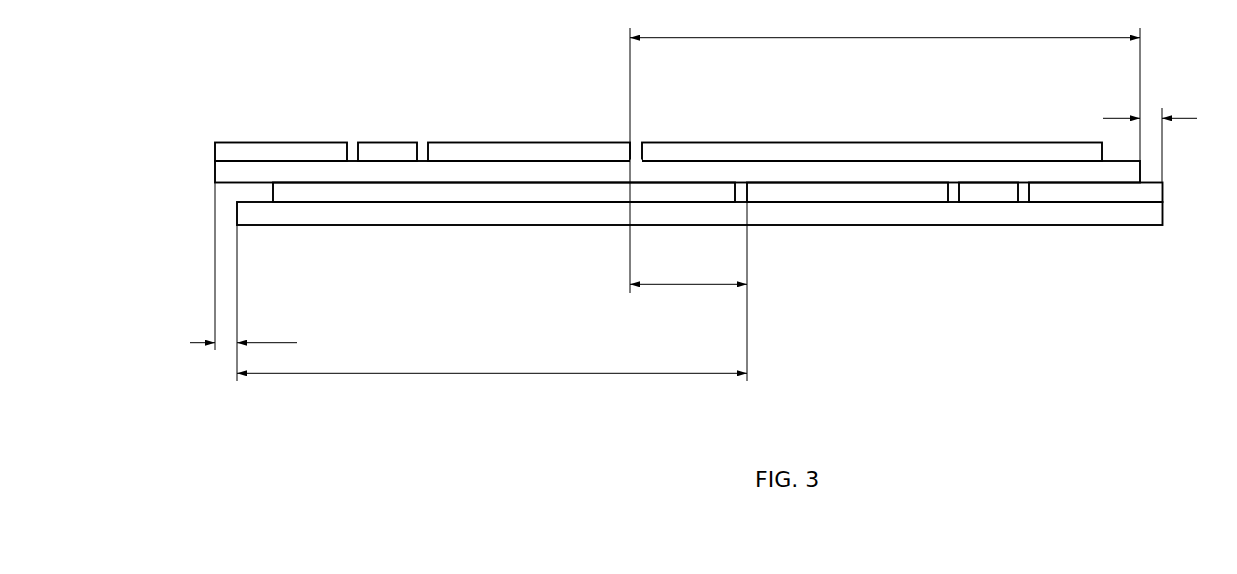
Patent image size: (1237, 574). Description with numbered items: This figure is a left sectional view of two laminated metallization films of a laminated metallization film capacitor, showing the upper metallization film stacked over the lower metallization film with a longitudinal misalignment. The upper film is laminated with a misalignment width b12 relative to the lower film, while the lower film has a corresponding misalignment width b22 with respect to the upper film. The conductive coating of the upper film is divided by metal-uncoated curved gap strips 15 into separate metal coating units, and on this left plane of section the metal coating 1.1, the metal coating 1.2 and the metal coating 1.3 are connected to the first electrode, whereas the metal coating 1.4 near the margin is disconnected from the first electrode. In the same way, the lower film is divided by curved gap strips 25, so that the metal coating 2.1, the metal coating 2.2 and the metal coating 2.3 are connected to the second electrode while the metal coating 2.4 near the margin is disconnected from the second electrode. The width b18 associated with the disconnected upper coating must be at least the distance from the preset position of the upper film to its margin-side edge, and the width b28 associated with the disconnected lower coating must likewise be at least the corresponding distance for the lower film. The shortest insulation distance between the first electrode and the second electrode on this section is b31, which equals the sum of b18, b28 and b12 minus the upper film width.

The metal coating 1.1 is at (268, 152).
The metal coating 1.2 is at (392, 152).
The metal coating 1.3 is at (542, 152).
The metal coating 1.4 is at (843, 152).
The curved gap strips 15 is at (635, 152).
The metal coating 2.1 is at (1103, 192).
The metal coating 2.2 is at (1002, 192).
The metal coating 2.3 is at (845, 190).
The metal coating 2.4 is at (450, 190).
The curved gap strips 25 is at (952, 199).
The width of disconnected metal coating b18 is at (885, 148).
The misalignment width b22 is at (1161, 135).
The shortest insulation distance b31 is at (688, 291).
The misalignment width b12 is at (243, 281).
The width of disconnected metal coating b28 is at (492, 356).